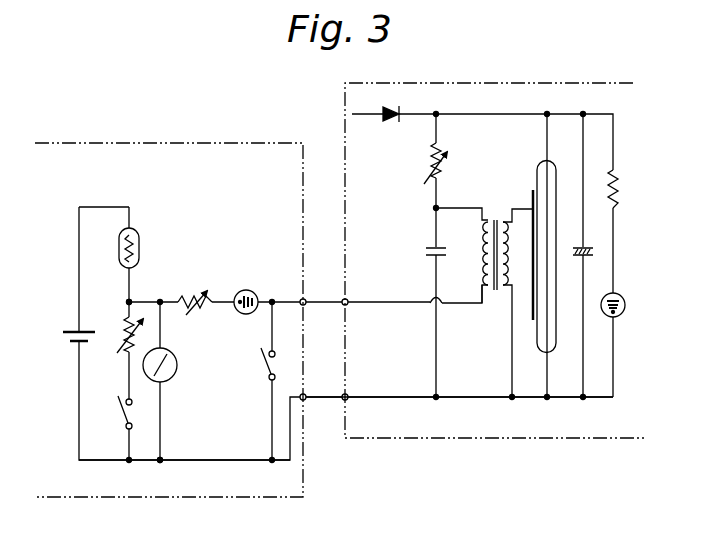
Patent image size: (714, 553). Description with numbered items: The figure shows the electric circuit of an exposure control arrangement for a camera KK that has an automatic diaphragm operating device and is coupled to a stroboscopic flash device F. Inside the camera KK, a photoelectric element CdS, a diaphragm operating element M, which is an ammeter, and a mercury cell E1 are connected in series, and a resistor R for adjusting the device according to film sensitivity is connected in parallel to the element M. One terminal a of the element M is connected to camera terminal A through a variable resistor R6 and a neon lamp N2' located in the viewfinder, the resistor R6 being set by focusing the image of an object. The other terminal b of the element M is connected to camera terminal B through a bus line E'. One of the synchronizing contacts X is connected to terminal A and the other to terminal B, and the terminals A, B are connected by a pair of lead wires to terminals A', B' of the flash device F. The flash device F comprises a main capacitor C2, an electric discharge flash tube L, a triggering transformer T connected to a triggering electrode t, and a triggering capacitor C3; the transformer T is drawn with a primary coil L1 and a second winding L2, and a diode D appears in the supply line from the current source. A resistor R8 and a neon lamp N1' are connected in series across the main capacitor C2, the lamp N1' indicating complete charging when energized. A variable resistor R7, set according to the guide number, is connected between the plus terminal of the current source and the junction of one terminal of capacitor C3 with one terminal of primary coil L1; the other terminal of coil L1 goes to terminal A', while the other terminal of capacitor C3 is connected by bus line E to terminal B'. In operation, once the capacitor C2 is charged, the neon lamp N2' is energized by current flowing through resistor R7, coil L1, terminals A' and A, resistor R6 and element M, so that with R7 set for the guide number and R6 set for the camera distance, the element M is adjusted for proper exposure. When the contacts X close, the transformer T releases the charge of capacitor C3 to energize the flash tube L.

The camera KK is at (193, 140).
The flash device F is at (523, 82).
The diode D is at (390, 125).
The variable resistor R7 is at (445, 161).
The triggering transformer T is at (497, 215).
The electric discharge flash tube L is at (556, 190).
The resistor R8 is at (624, 231).
The photoelectric element CdS is at (148, 248).
The terminal of element M a is at (145, 292).
The mercury cell E1 is at (68, 343).
The resistor R is at (124, 350).
The variable resistor R6 is at (195, 313).
The neon lamp N2' is at (244, 290).
The camera terminal A is at (310, 293).
The flash device terminal A' is at (353, 293).
The triggering capacitor C3 is at (424, 302).
The primary coil L1 is at (462, 255).
The secondary winding L2 is at (518, 303).
The main capacitor C2 is at (591, 255).
The neon lamp N1' is at (626, 345).
The diaphragm operating element M is at (169, 381).
The synchronizing contacts X is at (262, 371).
The camera terminal B is at (310, 407).
The flash device terminal B' is at (353, 407).
The triggering electrode t is at (532, 322).
The terminal of element M b is at (159, 471).
The bus line E is at (459, 442).
The bus line E' is at (184, 495).